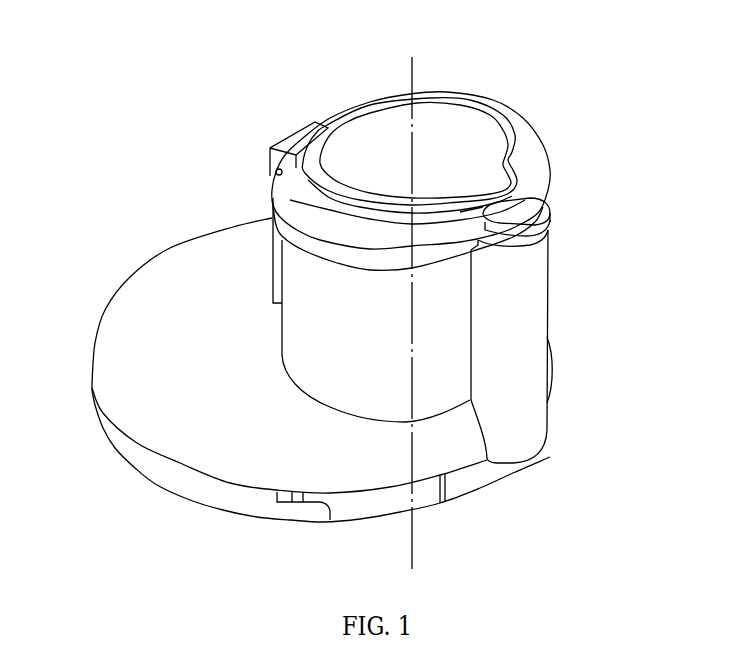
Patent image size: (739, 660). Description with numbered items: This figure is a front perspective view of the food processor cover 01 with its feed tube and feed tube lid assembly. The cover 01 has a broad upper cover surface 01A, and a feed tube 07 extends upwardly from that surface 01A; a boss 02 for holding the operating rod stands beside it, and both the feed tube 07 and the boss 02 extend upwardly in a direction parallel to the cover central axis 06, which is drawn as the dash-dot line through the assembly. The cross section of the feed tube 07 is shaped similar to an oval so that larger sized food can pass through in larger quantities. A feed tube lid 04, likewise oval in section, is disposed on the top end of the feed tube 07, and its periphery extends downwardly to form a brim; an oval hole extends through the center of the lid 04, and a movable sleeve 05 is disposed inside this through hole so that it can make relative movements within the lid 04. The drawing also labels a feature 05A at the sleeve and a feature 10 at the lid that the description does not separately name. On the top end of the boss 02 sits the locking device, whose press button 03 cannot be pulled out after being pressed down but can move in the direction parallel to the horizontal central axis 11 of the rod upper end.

The food processor cover 01 is at (103, 298).
The upper cover surface 01A is at (213, 288).
The boss 02 is at (523, 270).
The press button 03 is at (545, 208).
The feed tube lid 04 is at (528, 145).
The movable sleeve 05 is at (387, 131).
The cap rim 05A is at (490, 110).
The cover central axis 06 is at (412, 67).
The feed tube 07 is at (440, 318).
The tab 10 is at (272, 170).
The horizontal central axis 11 is at (550, 216).